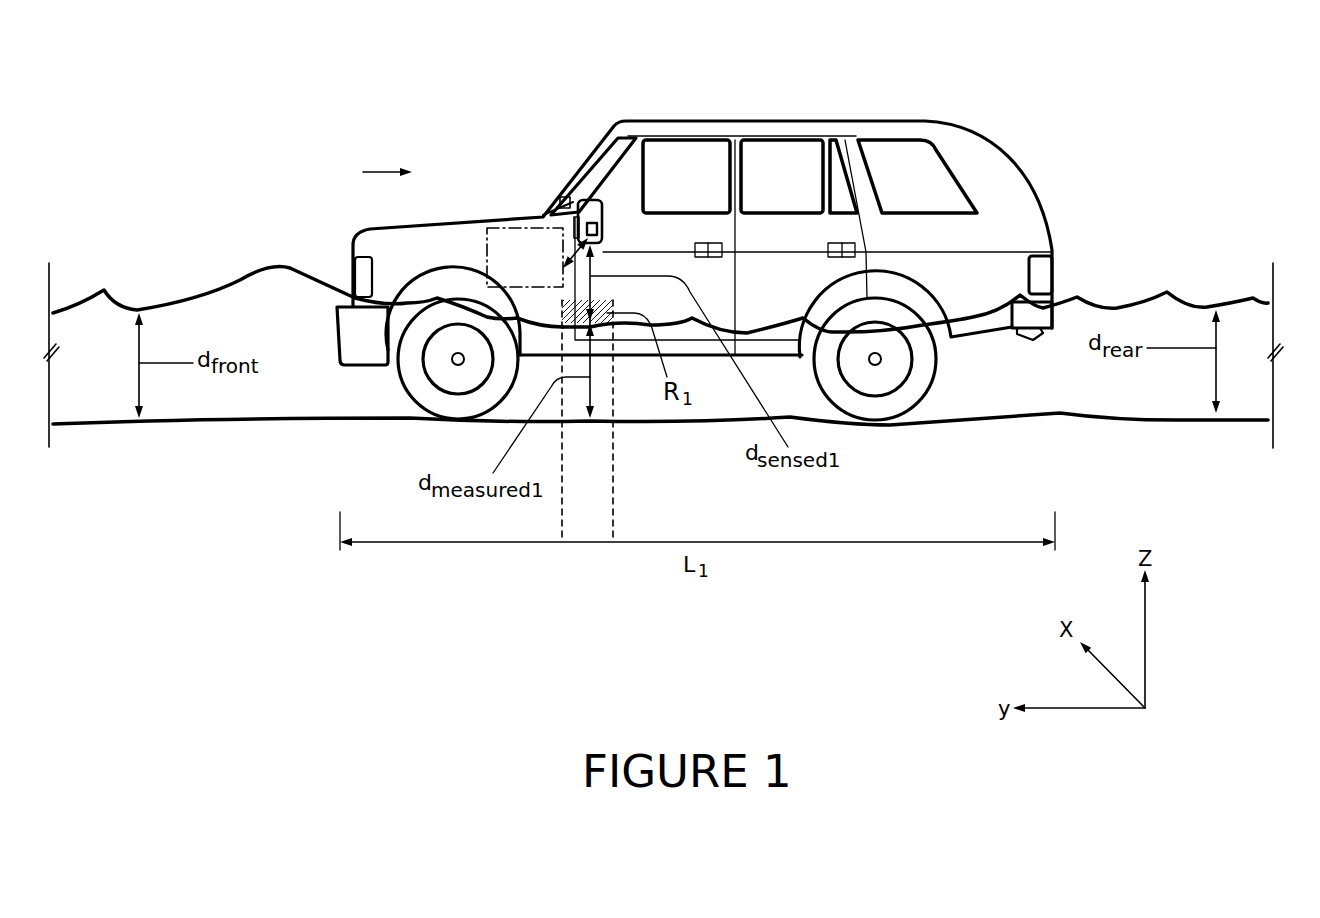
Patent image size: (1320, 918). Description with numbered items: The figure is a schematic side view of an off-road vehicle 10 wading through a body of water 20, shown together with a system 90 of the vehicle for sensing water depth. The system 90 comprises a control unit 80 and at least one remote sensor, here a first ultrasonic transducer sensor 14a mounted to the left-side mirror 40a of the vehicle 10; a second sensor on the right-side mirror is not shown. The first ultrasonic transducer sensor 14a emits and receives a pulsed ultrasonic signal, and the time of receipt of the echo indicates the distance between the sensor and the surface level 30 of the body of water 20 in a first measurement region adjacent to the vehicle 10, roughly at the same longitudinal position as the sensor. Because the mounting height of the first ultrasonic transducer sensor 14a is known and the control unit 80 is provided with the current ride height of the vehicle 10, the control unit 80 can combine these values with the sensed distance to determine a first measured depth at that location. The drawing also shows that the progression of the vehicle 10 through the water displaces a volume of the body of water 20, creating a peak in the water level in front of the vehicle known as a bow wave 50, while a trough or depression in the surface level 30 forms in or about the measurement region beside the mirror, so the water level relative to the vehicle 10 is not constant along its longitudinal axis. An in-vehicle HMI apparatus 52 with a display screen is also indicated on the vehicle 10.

The vehicle 10 is at (968, 128).
The first ultrasonic transducer sensor 14a is at (598, 228).
The body of water 20 is at (1150, 385).
The surface level 30 is at (1102, 305).
The left-side mirror 40a is at (590, 205).
The bow wave 50 is at (285, 262).
The in-vehicle HMI apparatus 52 is at (549, 187).
The control unit 80 is at (540, 270).
The system 90 is at (374, 174).